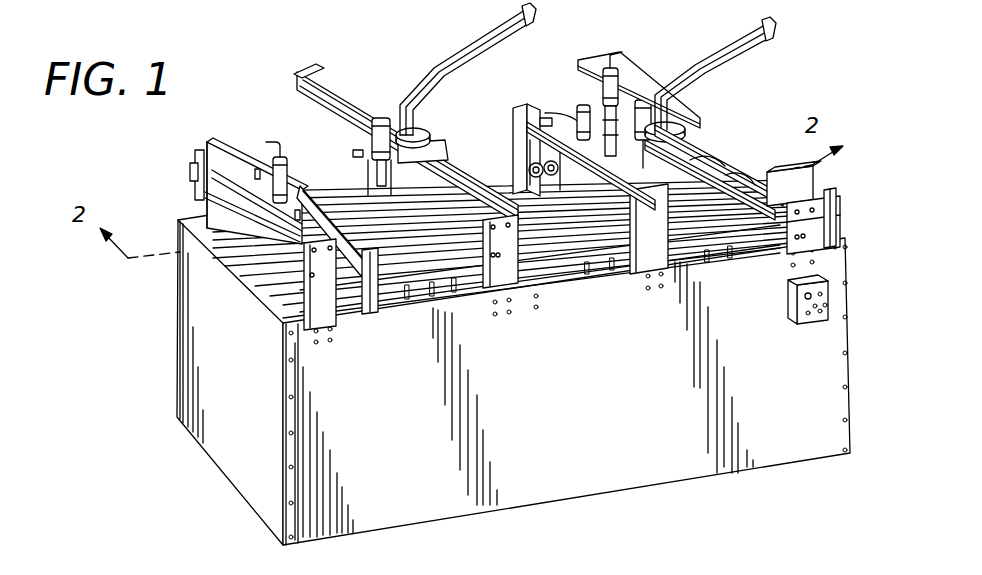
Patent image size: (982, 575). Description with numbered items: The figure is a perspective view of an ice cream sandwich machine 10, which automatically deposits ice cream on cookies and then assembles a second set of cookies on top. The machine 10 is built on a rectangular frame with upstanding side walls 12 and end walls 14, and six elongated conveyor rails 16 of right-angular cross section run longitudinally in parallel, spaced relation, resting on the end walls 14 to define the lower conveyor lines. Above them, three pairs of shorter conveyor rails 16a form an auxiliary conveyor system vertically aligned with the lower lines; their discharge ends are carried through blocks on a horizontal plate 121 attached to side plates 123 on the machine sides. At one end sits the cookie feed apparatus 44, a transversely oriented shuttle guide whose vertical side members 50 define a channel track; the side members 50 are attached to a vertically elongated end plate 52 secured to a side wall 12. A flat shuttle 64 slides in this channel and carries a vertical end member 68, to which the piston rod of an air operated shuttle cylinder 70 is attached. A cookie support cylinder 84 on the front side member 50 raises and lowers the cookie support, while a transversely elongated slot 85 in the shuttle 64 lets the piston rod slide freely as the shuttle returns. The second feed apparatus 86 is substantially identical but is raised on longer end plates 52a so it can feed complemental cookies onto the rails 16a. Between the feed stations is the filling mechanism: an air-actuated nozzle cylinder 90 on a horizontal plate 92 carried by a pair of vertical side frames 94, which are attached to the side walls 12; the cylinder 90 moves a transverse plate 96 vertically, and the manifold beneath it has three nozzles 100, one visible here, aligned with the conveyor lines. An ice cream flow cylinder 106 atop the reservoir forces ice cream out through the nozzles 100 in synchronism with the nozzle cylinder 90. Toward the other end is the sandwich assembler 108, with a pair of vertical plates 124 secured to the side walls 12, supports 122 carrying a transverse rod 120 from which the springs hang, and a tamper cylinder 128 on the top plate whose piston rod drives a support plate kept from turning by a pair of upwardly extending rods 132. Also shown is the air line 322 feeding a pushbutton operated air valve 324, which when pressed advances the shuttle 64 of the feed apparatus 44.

The ice cream sandwich machine 10 is at (493, 369).
The side walls 12 is at (534, 492).
The end walls 14 is at (222, 468).
The conveyor rails 16 is at (228, 272).
The conveyor rails 16a is at (345, 200).
The cookie feed apparatus 44 is at (724, 30).
The side members 50 is at (826, 190).
The end plate 52 is at (805, 228).
The end plates 52a is at (368, 170).
The shuttle 64 is at (728, 142).
The end member 68 is at (790, 178).
The shuttle cylinder 70 is at (603, 64).
The cookie support cylinder 84 is at (385, 114).
The slot 85 is at (722, 122).
The second feed apparatus 86 is at (456, 48).
The nozzle cylinder 90 is at (562, 115).
The plate 92 is at (540, 118).
The side frames 94 is at (512, 133).
The plate 96 is at (527, 150).
The nozzles 100 is at (575, 220).
The ice cream flow cylinder 106 is at (624, 80).
The sandwich assembler 108 is at (215, 135).
The rod 120 is at (207, 192).
The plate 121 is at (376, 305).
The supports 122 is at (196, 165).
The side plates 123 is at (368, 308).
The vertical plates 124 is at (320, 323).
The tamper cylinder 128 is at (300, 140).
The rods 132 is at (257, 168).
The line 322 is at (828, 294).
The pushbutton air valve 324 is at (800, 300).